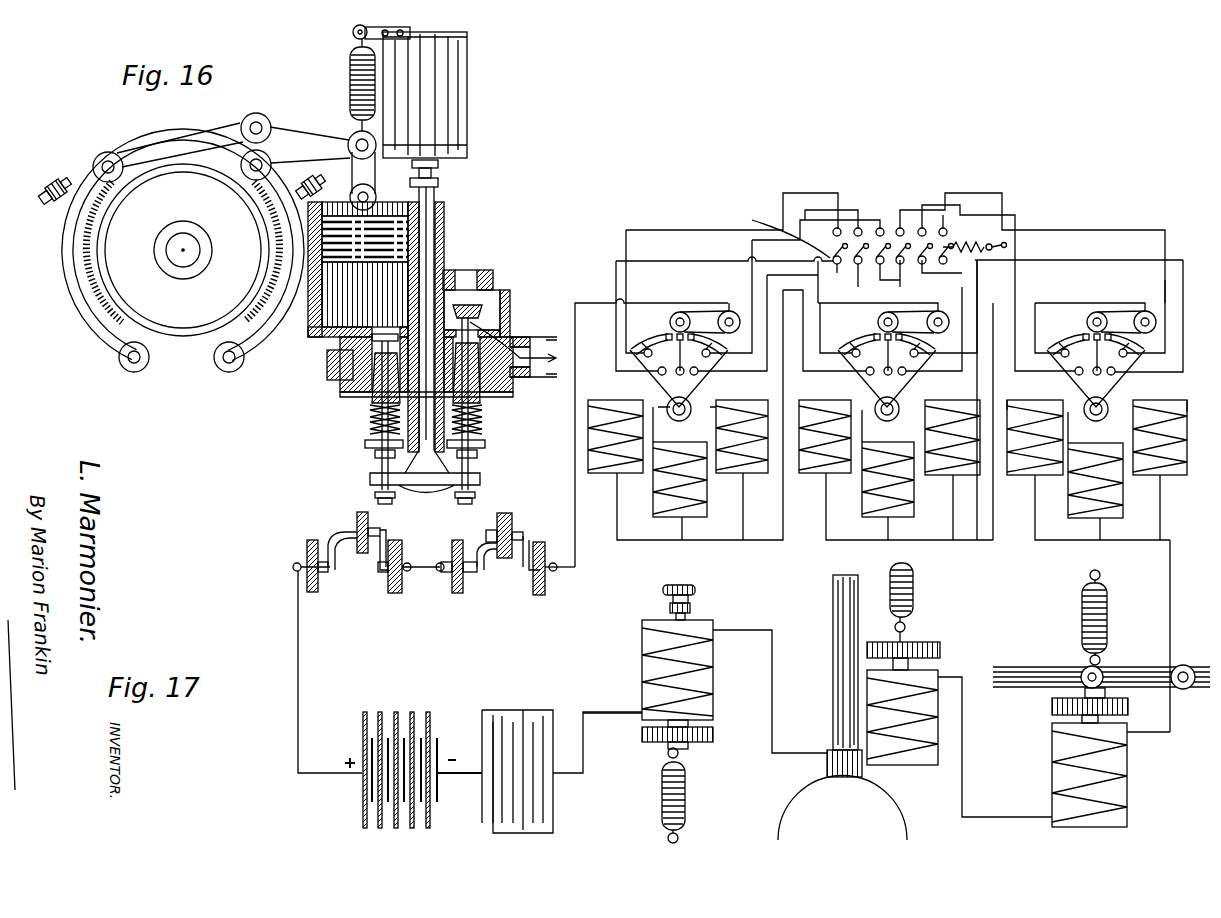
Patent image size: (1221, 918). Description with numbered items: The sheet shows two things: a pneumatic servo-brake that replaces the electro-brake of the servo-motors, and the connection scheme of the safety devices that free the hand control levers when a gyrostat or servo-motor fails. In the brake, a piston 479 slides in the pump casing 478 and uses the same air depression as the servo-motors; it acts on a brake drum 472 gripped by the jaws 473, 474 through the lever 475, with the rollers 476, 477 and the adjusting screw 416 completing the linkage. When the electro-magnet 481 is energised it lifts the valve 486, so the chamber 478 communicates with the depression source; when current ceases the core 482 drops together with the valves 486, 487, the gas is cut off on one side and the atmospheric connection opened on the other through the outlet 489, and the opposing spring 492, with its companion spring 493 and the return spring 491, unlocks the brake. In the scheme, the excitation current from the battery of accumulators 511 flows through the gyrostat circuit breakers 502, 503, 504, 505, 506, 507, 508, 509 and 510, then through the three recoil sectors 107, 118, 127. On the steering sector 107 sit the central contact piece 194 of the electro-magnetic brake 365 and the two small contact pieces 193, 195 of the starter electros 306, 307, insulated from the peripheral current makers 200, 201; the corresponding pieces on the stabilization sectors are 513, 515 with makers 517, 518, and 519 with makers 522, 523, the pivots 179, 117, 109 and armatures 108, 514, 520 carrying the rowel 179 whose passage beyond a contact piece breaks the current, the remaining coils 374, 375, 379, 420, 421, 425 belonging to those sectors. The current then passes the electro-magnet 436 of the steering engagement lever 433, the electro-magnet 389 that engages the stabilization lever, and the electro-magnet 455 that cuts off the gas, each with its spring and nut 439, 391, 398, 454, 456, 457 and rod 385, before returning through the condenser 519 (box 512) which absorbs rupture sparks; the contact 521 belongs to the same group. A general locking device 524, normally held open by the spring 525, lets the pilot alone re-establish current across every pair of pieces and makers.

In FIG. 16, the adjusting screw 416 is at (55, 190).
In FIG. 16, the lever 475 is at (268, 135).
In FIG. 16, the roller 477 is at (305, 178).
In FIG. 16, the piston 479 is at (300, 230).
In FIG. 16, the pump casing 478 is at (300, 292).
In FIG. 16, the jaw 473 is at (92, 312).
In FIG. 16, the brake drum 472 is at (150, 318).
In FIG. 16, the jaw 474 is at (246, 346).
In FIG. 16, the roller 476 is at (62, 175).
In FIG. 16, the spring 491 is at (350, 72).
In FIG. 16, the electro-magnet 481 is at (468, 68).
In FIG. 16, the core 482 is at (468, 146).
In FIG. 16, the valve 486 is at (490, 278).
In FIG. 16, the outlet pipe 489 is at (545, 377).
In FIG. 16, the valve 487 is at (340, 385).
In FIG. 16, the opposing spring 492 is at (368, 430).
In FIG. 16, the valve spring 493 is at (486, 432).
In FIG. 17, the recoil sector 107 is at (618, 330).
In FIG. 17, the rowel 179 is at (675, 312).
In FIG. 17, the armature 108 is at (705, 312).
In FIG. 17, the central contact piece 194 is at (660, 364).
In FIG. 17, the contact piece 195 is at (702, 366).
In FIG. 17, the contact piece 193 is at (648, 360).
In FIG. 17, the current maker 200 is at (820, 188).
In FIG. 17, the current maker 201 is at (852, 206).
In FIG. 17, the armature 117 is at (904, 318).
In FIG. 17, the contact sector 514 is at (868, 374).
In FIG. 17, the contact piece 513 is at (838, 362).
In FIG. 17, the current maker 517 is at (879, 226).
In FIG. 17, the current maker 518 is at (908, 208).
In FIG. 17, the recoil sector 118 is at (950, 364).
In FIG. 17, the contact piece 515 is at (931, 275).
In FIG. 17, the condenser 519 is at (992, 310).
In FIG. 17, the current maker 522 is at (935, 204).
In FIG. 17, the current maker 523 is at (985, 205).
In FIG. 17, the general locking device 524 is at (790, 231).
In FIG. 17, the spring 525 is at (1000, 240).
In FIG. 17, the contact 521 is at (1090, 260).
In FIG. 17, the armature 109 is at (1120, 316).
In FIG. 17, the contact 520 is at (1076, 375).
In FIG. 17, the recoil sector 127 is at (1183, 372).
In FIG. 17, the electro 306 is at (605, 460).
In FIG. 17, the electro-magnetic brake 365 is at (685, 490).
In FIG. 17, the electro 307 is at (754, 472).
In FIG. 17, the coil 374 is at (820, 478).
In FIG. 17, the coil / dome 379 is at (866, 508).
In FIG. 17, the coil 375 is at (948, 480).
In FIG. 17, the coil 420 is at (1030, 470).
In FIG. 17, the coil 425 is at (1090, 510).
In FIG. 17, the coil 421 is at (1172, 470).
In FIG. 17, the circuit breaker 502 is at (300, 565).
In FIG. 17, the circuit breaker 503 is at (340, 544).
In FIG. 17, the circuit breaker 504 is at (370, 530).
In FIG. 17, the circuit breaker 505 is at (380, 560).
In FIG. 17, the circuit breaker 506 is at (448, 560).
In FIG. 17, the circuit breaker 507 is at (488, 570).
In FIG. 17, the circuit breaker 508 is at (510, 522).
In FIG. 17, the circuit breaker 509 is at (530, 538).
In FIG. 17, the contact 510 is at (556, 572).
In FIG. 17, the battery of accumulators 511 is at (398, 712).
In FIG. 17, the condenser 512 is at (513, 710).
In FIG. 17, the knob 456 is at (696, 586).
In FIG. 17, the electro-magnet 455 is at (660, 668).
In FIG. 17, the nut 457 is at (712, 732).
In FIG. 17, the spring 454 is at (688, 786).
In FIG. 17, the rod 385 is at (833, 596).
In FIG. 17, the spring 398 is at (912, 592).
In FIG. 17, the nut 391 is at (940, 648).
In FIG. 17, the electro-magnet 389 is at (928, 730).
In FIG. 17, the spring 439 is at (1108, 622).
In FIG. 17, the steering engagement lever 433 is at (1040, 660).
In FIG. 17, the electro-magnet 436 is at (1060, 760).